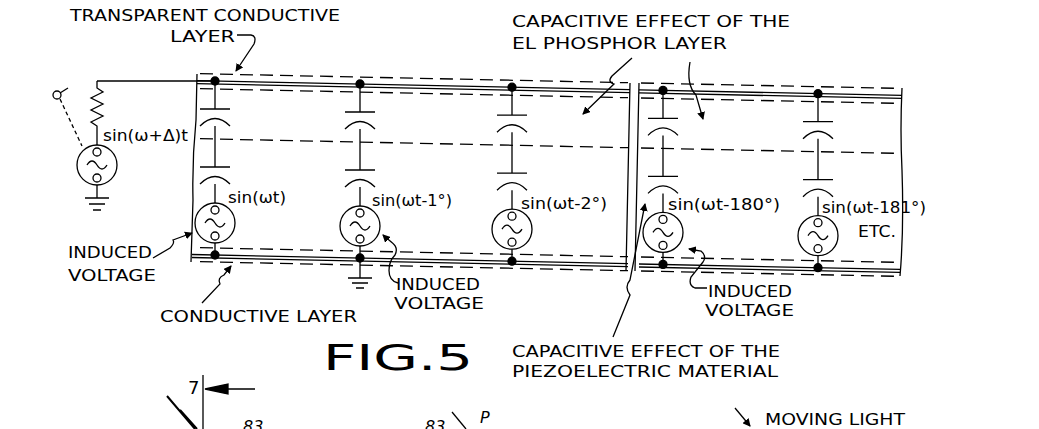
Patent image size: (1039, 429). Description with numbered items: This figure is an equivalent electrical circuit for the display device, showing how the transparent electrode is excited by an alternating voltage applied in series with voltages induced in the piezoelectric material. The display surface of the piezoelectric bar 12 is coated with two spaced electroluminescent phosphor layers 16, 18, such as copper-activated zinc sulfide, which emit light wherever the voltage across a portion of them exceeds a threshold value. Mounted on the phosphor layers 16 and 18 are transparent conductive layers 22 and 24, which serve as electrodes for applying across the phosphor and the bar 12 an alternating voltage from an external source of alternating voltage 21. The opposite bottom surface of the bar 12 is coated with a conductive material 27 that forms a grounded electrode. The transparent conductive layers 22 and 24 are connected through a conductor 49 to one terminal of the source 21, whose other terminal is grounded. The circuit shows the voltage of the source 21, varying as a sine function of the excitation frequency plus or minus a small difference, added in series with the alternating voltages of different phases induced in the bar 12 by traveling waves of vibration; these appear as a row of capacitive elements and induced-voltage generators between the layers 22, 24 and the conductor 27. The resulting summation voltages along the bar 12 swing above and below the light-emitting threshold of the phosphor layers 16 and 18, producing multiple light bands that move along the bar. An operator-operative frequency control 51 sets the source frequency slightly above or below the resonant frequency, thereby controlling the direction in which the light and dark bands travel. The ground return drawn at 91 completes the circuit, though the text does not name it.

The piezoelectric bar 12 is at (184, 197).
The electroluminescent phosphor layer 16 is at (307, 113).
The electroluminescent phosphor layer 18 is at (728, 115).
The source of alternating voltage 21 is at (79, 181).
The transparent conductive layer 22 is at (407, 85).
The transparent conductive layer 24 is at (819, 93).
The conductive material 27 is at (563, 266).
The conductor 49 is at (142, 79).
The frequency control 51 is at (74, 71).
The ground connection 91 is at (352, 275).